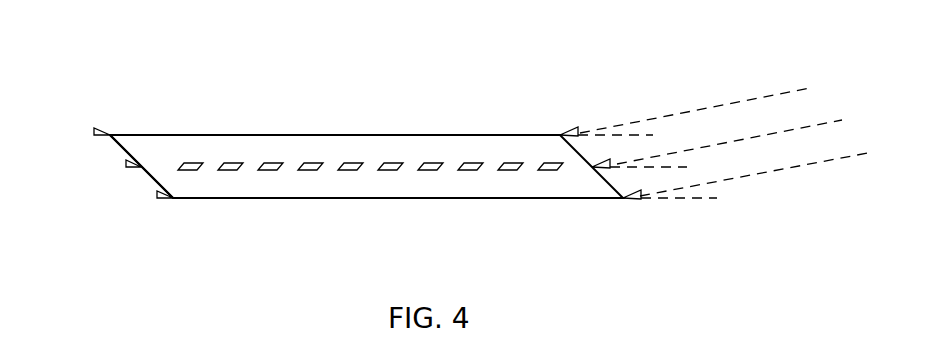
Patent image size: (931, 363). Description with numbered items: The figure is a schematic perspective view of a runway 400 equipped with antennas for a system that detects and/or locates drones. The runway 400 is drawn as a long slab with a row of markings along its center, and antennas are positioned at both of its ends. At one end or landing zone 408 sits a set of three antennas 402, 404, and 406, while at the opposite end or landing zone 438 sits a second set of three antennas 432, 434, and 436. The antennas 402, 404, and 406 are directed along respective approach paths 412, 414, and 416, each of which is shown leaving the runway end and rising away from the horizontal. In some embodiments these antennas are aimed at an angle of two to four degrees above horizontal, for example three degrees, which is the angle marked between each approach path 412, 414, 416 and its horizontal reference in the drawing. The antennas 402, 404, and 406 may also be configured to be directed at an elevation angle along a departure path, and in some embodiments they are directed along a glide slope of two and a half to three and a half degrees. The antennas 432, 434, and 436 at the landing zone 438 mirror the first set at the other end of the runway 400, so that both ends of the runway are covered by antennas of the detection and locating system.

The runway 400 is at (268, 84).
The antenna 402 is at (566, 132).
The antenna 404 is at (600, 175).
The antenna 406 is at (627, 200).
The end or landing zone 408 is at (512, 134).
The approach path 412 is at (725, 105).
The approach path 414 is at (820, 123).
The approach path 416 is at (830, 160).
The antenna 432 is at (94, 132).
The antenna 434 is at (126, 164).
The antenna 436 is at (157, 196).
The end or landing zone 438 is at (118, 134).